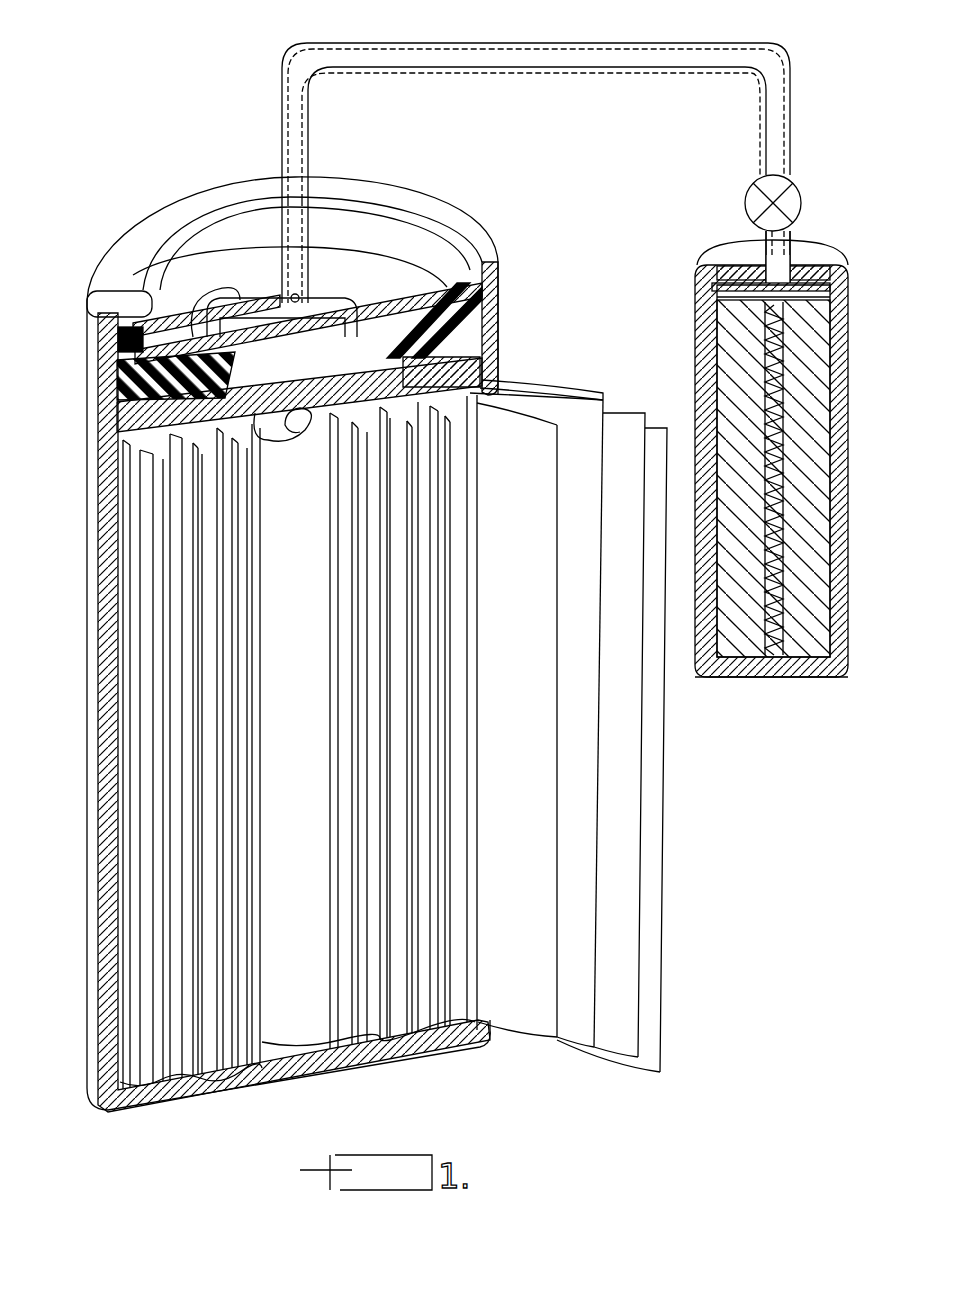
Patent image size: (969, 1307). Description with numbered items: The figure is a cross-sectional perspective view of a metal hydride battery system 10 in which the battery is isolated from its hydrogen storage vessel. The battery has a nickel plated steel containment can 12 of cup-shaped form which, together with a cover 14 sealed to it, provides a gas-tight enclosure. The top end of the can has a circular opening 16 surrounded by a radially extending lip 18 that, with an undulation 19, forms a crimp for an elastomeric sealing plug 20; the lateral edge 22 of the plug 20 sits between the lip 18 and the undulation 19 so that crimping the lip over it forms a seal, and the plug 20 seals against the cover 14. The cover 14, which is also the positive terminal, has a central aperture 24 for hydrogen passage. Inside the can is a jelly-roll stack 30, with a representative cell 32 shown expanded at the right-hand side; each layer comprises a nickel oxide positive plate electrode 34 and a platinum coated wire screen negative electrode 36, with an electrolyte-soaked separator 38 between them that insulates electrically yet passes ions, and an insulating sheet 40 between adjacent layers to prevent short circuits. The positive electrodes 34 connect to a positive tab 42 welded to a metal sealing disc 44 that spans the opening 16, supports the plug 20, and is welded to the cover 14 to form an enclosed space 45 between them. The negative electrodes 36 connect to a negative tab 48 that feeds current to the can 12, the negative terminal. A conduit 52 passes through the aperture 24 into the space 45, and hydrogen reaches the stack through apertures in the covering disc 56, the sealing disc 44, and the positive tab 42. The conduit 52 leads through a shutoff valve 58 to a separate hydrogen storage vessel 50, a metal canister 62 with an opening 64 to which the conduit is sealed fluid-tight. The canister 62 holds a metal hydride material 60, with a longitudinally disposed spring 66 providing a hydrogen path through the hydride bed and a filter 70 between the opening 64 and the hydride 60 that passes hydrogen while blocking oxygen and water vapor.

The metal hydride battery system 10 is at (73, 672).
The containment can 12 is at (100, 612).
The cover 14 is at (237, 268).
The opening 16 is at (97, 296).
The lip 18 is at (385, 214).
The undulation 19 is at (120, 420).
The elastomeric sealing plug 20 is at (480, 368).
The lateral edge 22 is at (118, 352).
The aperture 24 is at (302, 292).
The stack 30 is at (178, 1085).
The cell 32 is at (540, 1040).
The positive plate electrode 34 is at (575, 1035).
The negative electrode 36 is at (650, 998).
The separator 38 is at (630, 947).
The insulating sheet 40 is at (517, 1015).
The positive tab 42 is at (277, 428).
The metal sealing disc 44 is at (482, 285).
The enclosed space 45 is at (380, 292).
The negative tab 48 is at (325, 1042).
The hydrogen storage vessel 50 is at (755, 680).
The conduit 52 is at (517, 42).
The covering disc 56 is at (222, 290).
The shutoff valve 58 is at (804, 196).
The metal hydride material 60 is at (718, 334).
The metal canister 62 is at (848, 490).
The opening 64 is at (795, 262).
The spring 66 is at (790, 350).
The filter 70 is at (718, 289).